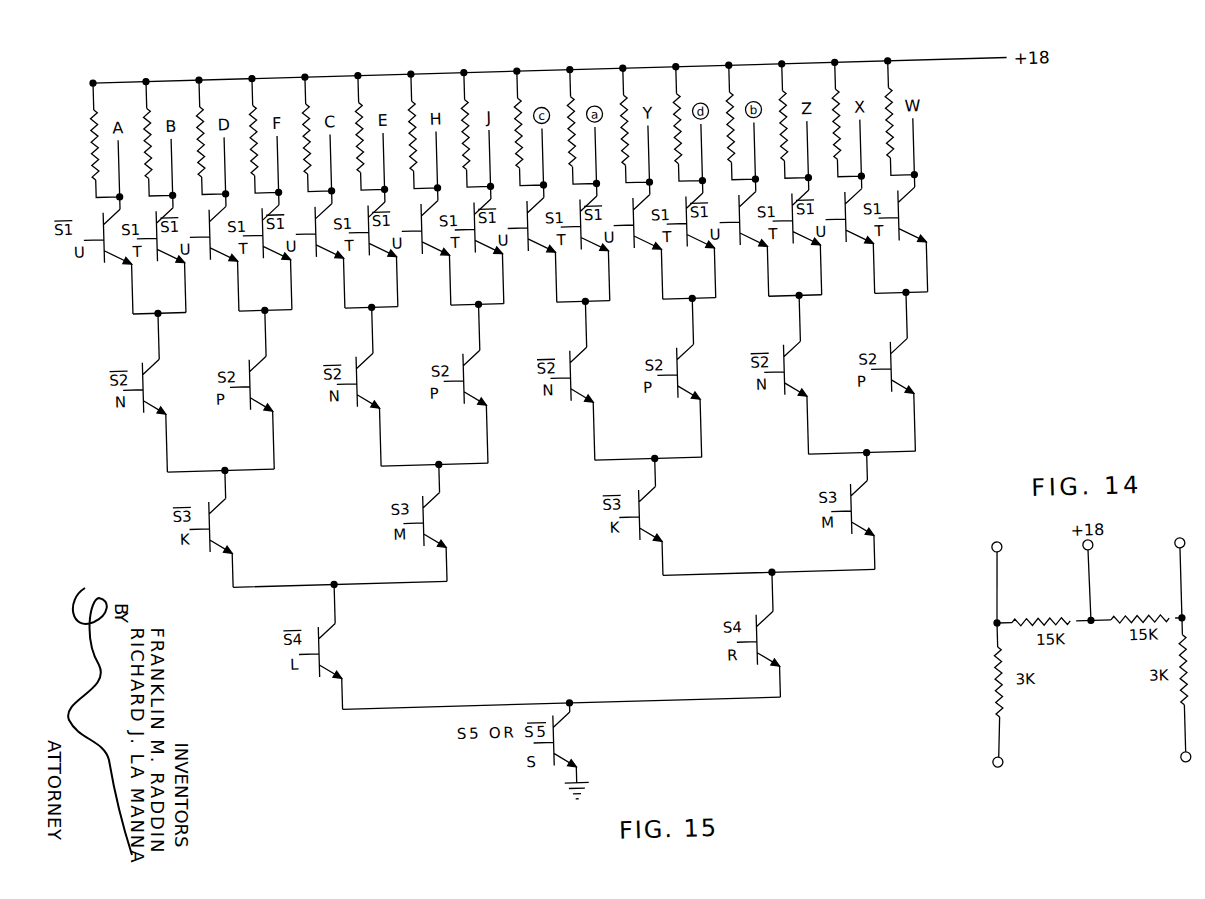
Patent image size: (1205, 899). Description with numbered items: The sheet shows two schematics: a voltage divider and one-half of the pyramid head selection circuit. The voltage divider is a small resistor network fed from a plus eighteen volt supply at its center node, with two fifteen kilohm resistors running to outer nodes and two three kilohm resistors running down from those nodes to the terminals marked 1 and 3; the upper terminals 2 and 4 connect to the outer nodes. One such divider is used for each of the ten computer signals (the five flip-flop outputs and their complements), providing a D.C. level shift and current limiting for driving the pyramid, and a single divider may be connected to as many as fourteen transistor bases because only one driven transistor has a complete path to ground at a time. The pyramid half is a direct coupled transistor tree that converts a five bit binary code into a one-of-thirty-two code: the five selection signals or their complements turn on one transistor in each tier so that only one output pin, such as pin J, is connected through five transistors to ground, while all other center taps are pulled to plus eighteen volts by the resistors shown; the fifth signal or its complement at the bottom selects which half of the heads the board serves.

The terminal 1 is at (997, 754).
The terminal 2 is at (997, 572).
The terminal 3 is at (1187, 744).
The terminal 4 is at (1180, 568).